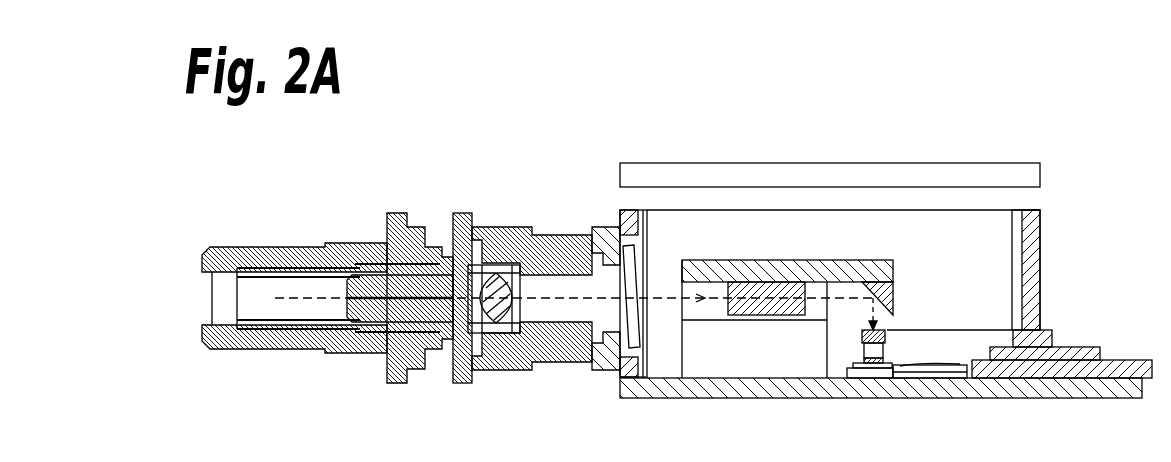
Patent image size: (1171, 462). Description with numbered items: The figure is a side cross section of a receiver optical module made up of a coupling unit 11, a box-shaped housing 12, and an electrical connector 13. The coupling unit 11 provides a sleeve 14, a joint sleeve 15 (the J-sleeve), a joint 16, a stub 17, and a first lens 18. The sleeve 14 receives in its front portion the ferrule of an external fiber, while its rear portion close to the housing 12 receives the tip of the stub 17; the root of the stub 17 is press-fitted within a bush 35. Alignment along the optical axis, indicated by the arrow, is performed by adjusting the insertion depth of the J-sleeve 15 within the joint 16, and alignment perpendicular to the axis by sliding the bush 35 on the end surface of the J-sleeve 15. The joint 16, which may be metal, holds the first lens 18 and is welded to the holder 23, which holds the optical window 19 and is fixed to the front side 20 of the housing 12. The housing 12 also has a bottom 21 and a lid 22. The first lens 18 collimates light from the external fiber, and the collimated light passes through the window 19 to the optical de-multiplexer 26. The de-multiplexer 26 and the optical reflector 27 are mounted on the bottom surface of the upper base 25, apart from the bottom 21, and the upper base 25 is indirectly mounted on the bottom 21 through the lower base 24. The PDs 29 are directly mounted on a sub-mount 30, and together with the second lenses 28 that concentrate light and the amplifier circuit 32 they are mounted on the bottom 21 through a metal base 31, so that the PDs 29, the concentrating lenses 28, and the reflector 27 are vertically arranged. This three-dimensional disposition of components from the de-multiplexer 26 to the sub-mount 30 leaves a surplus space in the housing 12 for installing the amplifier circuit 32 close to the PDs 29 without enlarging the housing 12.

The coupling unit 11 is at (593, 187).
The housing 12 is at (1032, 150).
The electrical connector 13 is at (1080, 347).
The sleeve 14 is at (293, 327).
The joint sleeve 15 is at (488, 367).
The joint 16 is at (553, 352).
The stub 17 is at (387, 325).
The first lens 18 is at (510, 265).
The optical window 19 is at (632, 273).
The front side 20 is at (1033, 250).
The bottom 21 is at (733, 390).
The lid 22 is at (1045, 172).
The holder 23 is at (605, 370).
The lower base 24 is at (692, 377).
The upper base 25 is at (840, 260).
The optical de-multiplexer 26 is at (745, 318).
The optical reflector 27 is at (893, 297).
The second lenses 28 is at (862, 332).
The PDs 29 is at (863, 350).
The sub-mount 30 is at (852, 375).
The metal base 31 is at (937, 377).
The amplifier circuit 32 is at (923, 363).
The bush 35 is at (438, 352).